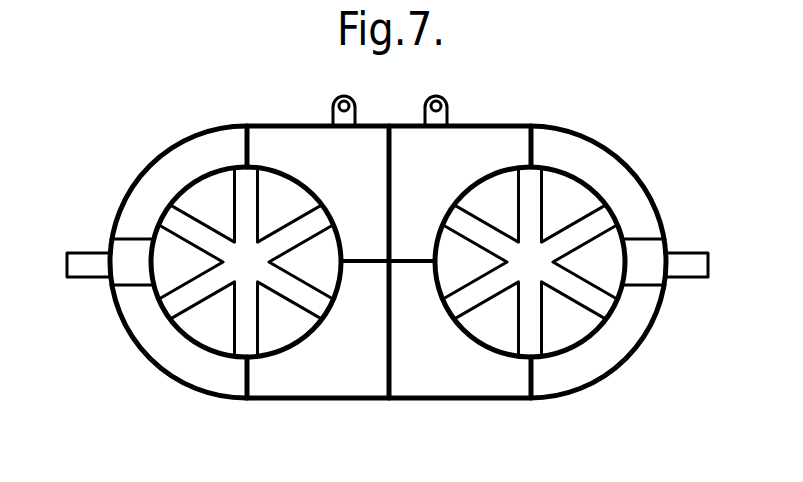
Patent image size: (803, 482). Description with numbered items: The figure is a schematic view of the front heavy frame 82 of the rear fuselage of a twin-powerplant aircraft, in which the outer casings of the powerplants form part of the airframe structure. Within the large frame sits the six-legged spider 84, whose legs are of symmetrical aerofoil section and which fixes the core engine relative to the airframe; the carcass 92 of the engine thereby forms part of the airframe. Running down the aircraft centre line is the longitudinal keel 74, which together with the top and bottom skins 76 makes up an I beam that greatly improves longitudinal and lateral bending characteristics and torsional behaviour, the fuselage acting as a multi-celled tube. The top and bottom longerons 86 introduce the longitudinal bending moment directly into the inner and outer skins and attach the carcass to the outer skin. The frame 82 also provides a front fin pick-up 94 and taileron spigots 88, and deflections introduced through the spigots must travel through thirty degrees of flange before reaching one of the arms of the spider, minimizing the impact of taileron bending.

The longitudinal keel 74 is at (393, 343).
The top and bottom skins 76 is at (503, 124).
The front heavy frame 82 is at (162, 391).
The spider 84 is at (197, 292).
The longerons 86 is at (247, 152).
The taileron spigots 88 is at (80, 258).
The carcass 92 is at (593, 333).
The front fin pick-up 94 is at (425, 112).